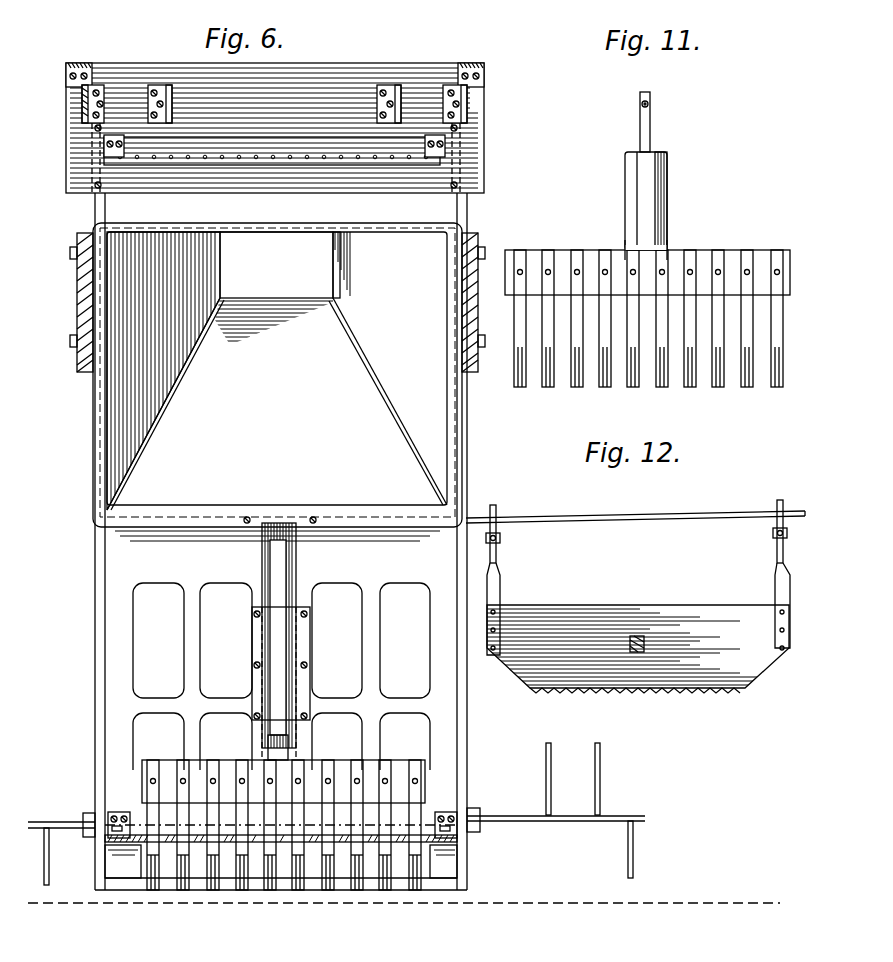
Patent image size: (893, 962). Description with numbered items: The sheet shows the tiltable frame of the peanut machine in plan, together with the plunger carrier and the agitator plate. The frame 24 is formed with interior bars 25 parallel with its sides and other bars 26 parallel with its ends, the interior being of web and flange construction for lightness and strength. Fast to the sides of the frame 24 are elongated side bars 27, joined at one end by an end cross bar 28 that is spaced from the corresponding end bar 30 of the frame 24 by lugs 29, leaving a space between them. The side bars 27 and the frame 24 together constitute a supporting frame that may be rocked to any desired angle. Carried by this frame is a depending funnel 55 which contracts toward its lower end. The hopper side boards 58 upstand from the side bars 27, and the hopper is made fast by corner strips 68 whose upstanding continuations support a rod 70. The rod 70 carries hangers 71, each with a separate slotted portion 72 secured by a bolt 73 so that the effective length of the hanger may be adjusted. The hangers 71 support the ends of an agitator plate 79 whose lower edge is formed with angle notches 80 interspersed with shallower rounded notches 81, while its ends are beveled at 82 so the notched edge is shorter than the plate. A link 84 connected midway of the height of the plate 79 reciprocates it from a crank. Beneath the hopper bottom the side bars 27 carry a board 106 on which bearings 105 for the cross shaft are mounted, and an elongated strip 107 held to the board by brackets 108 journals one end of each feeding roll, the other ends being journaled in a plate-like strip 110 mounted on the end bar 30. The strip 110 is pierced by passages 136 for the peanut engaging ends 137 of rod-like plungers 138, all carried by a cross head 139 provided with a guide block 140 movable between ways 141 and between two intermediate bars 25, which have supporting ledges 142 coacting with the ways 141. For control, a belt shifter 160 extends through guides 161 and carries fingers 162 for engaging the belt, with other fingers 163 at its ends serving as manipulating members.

In FIG. 6, the frame 24 is at (112, 688).
In FIG. 6, the interior bars 25 is at (230, 650).
In FIG. 6, the bars 26 is at (152, 702).
In FIG. 6, the side bars 27 is at (95, 212).
In FIG. 12, the side bars 27 is at (500, 682).
In FIG. 6, the end cross bar 28 is at (132, 880).
In FIG. 6, the lugs 29 is at (120, 860).
In FIG. 6, the end bar 30 is at (170, 830).
In FIG. 6, the funnel 55 is at (277, 376).
In FIG. 6, the side boards 58 is at (77, 292).
In FIG. 6, the corner strips 68 is at (77, 368).
In FIG. 12, the rod 70 is at (635, 514).
In FIG. 12, the hangers 71 is at (500, 578).
In FIG. 12, the separate portion 72 is at (497, 508).
In FIG. 12, the bolt 73 is at (500, 538).
In FIG. 12, the agitator plate 79 is at (688, 606).
In FIG. 12, the angle notches 80 is at (575, 690).
In FIG. 12, the rounded notches 81 is at (630, 692).
In FIG. 12, the bevels 82 is at (520, 690).
In FIG. 12, the link 84 is at (637, 634).
In FIG. 6, the bearings 105 is at (146, 98).
In FIG. 6, the board 106 is at (275, 128).
In FIG. 6, the plate or strip 107 is at (272, 160).
In FIG. 6, the brackets 108 is at (104, 145).
In FIG. 6, the plate-like strip 110 is at (450, 845).
In FIG. 6, the passages 136 is at (250, 860).
In FIG. 6, the peanut engaging ends 137 is at (345, 870).
In FIG. 11, the peanut engaging ends 137 is at (690, 386).
In FIG. 6, the plungers 138 is at (275, 845).
In FIG. 11, the plungers 138 is at (606, 332).
In FIG. 6, the cross head 139 is at (164, 770).
In FIG. 11, the cross head 139 is at (737, 255).
In FIG. 6, the guide block 140 is at (282, 730).
In FIG. 11, the guide block 140 is at (645, 193).
In FIG. 6, the ways 141 is at (295, 636).
In FIG. 6, the supporting ledges 142 is at (270, 575).
In FIG. 6, the belt shifter 160 is at (583, 822).
In FIG. 6, the guides 161 is at (88, 806).
In FIG. 6, the fingers 162 is at (595, 752).
In FIG. 6, the fingers 163 is at (49, 852).